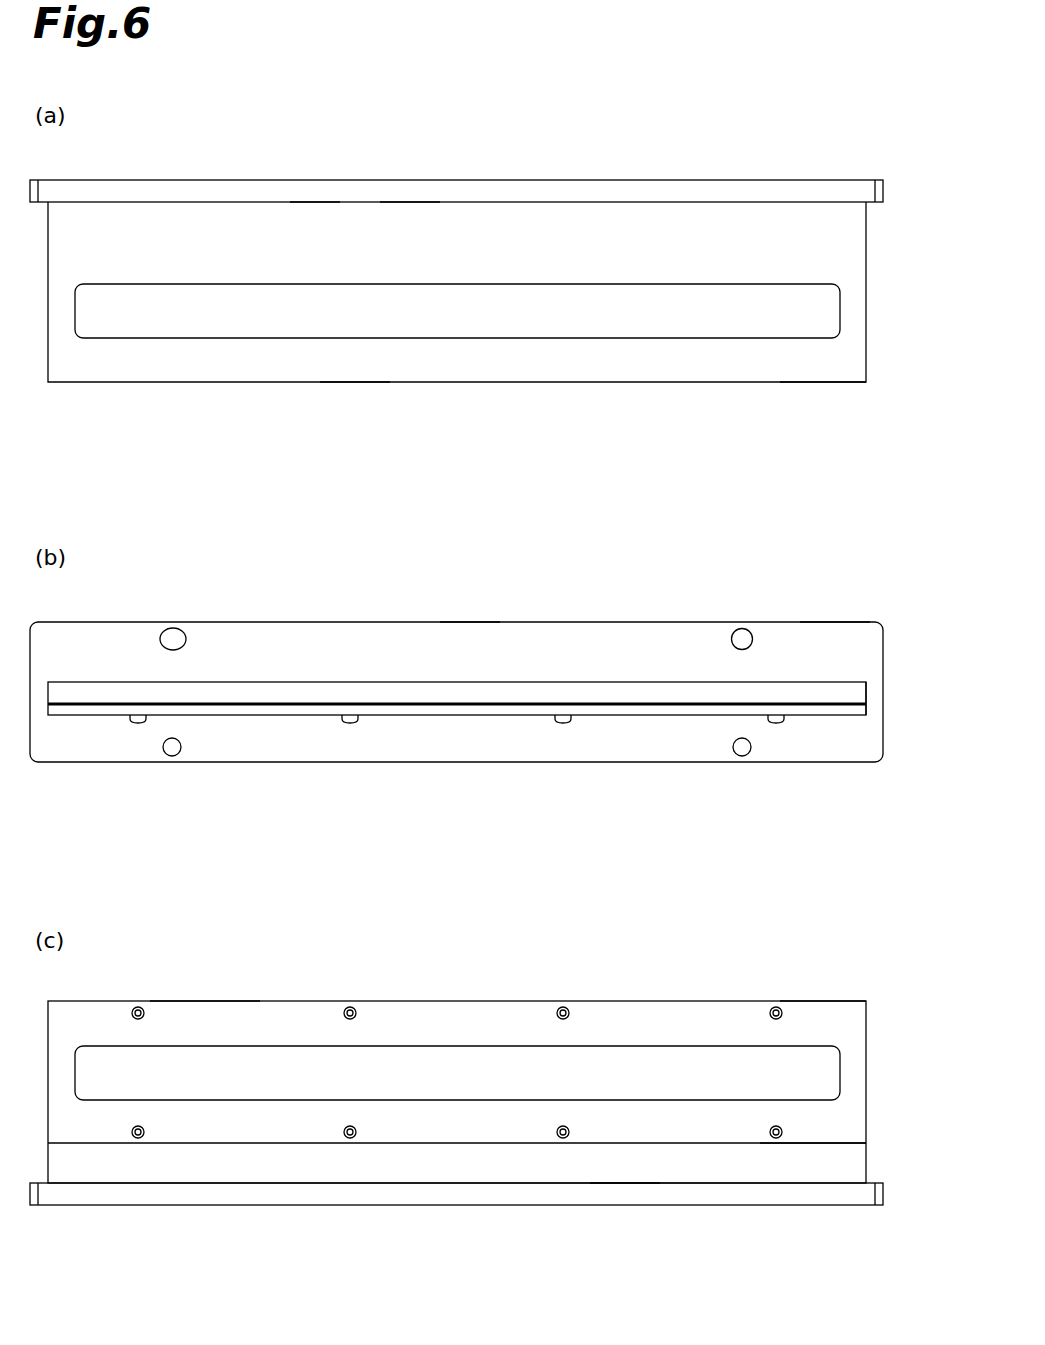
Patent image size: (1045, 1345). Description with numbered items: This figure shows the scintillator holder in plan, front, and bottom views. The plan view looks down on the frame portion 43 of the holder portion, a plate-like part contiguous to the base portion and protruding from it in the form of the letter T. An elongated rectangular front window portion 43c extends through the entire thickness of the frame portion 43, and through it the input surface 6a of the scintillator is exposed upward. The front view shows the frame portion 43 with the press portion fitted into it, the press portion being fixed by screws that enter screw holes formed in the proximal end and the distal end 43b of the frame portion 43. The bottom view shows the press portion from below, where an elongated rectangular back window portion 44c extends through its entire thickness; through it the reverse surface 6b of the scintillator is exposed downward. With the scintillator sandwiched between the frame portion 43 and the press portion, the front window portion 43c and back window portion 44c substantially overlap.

The input surface 6a is at (590, 323).
The reverse surface 6b is at (590, 1087).
The frame portion 43 is at (596, 680).
The distal end 43b is at (352, 362).
The front window portion 43c is at (443, 338).
The back window portion 44c is at (462, 1053).